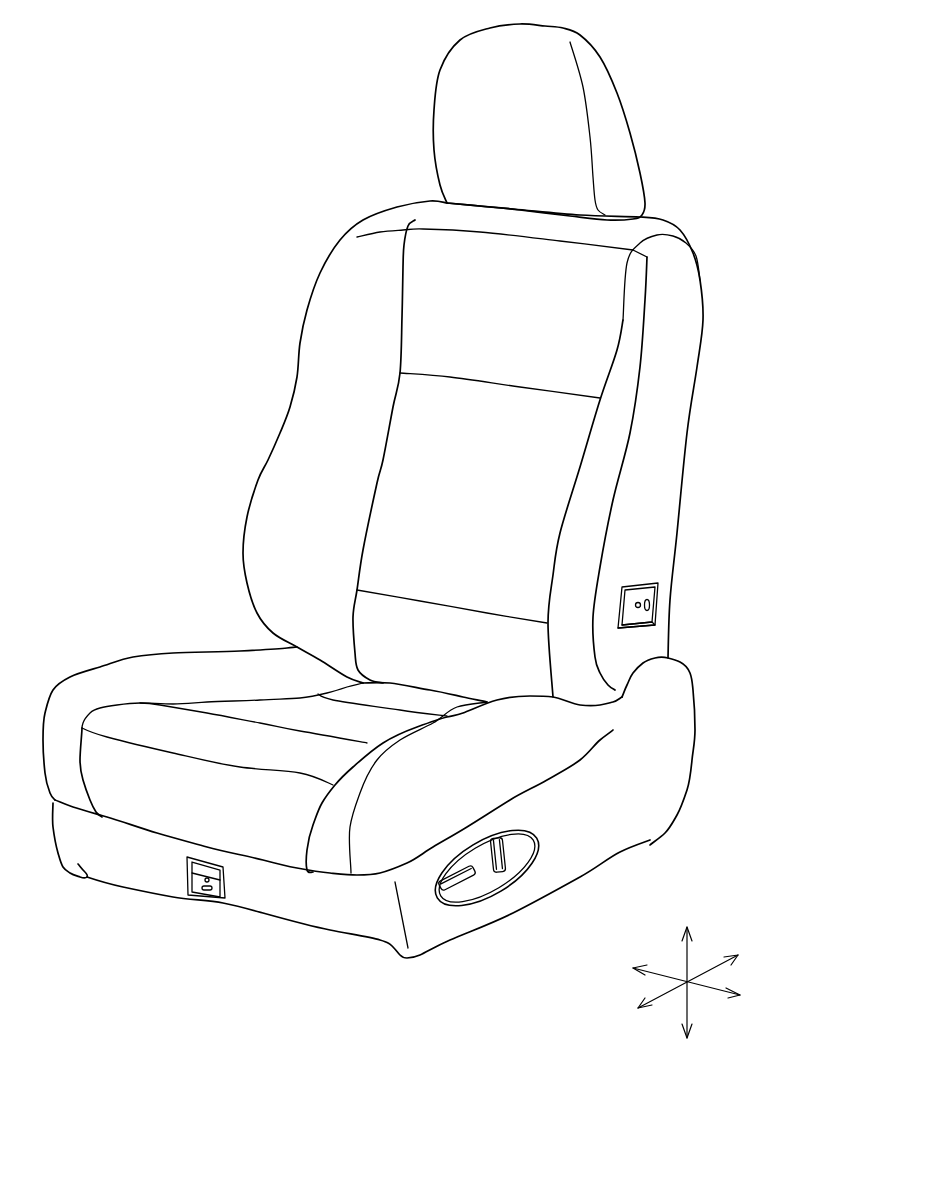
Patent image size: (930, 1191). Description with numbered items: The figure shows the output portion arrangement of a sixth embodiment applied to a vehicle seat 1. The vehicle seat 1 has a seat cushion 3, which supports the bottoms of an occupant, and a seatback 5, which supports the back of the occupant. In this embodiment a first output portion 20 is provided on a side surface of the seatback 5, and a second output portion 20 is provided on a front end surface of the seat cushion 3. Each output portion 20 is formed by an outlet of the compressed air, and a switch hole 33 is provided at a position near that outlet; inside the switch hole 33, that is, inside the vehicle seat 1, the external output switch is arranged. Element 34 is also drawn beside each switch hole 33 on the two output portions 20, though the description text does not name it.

The vehicle seat 1 is at (280, 197).
The seat cushion 3 is at (243, 673).
The seatback 5 is at (568, 428).
The output portion 20 is at (457, 760).
The switch hole 33 is at (660, 607).
The switch body 34 is at (645, 613).